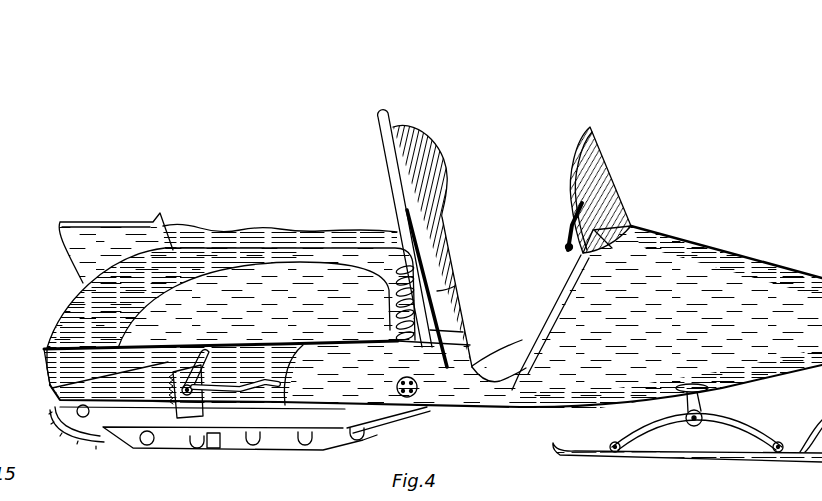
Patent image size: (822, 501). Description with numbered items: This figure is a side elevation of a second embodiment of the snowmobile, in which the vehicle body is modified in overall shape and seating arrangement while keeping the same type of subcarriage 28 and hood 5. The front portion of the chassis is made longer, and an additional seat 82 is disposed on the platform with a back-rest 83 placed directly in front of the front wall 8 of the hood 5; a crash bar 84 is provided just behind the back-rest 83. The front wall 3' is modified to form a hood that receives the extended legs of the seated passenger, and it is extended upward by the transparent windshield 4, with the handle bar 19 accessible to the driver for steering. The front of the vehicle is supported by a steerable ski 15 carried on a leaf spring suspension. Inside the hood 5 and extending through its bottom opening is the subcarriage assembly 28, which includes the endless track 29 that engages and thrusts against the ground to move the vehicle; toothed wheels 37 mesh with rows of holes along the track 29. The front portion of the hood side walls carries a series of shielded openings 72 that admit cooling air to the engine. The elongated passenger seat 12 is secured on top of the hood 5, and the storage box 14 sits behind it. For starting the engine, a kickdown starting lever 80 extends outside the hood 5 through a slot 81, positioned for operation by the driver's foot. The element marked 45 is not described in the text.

The storage box 14 is at (110, 222).
The passenger seat 12 is at (250, 240).
The hood 5 is at (97, 305).
The crash bar 84 is at (392, 180).
The back-rest 83 is at (442, 247).
The shielded openings 72 is at (450, 291).
The front wall 8 is at (458, 328).
The additional seat 82 is at (497, 350).
The handle bar 19 is at (572, 243).
The windshield 4 is at (615, 195).
The front wall 3' is at (726, 246).
The ski 15 is at (742, 455).
The subcarriage assembly 28 is at (380, 433).
The endless track 29 is at (298, 452).
The bogie wheel 45 is at (253, 450).
The toothed wheels 37 is at (93, 436).
The slot 81 is at (181, 425).
The kickdown starting lever 80 is at (230, 420).